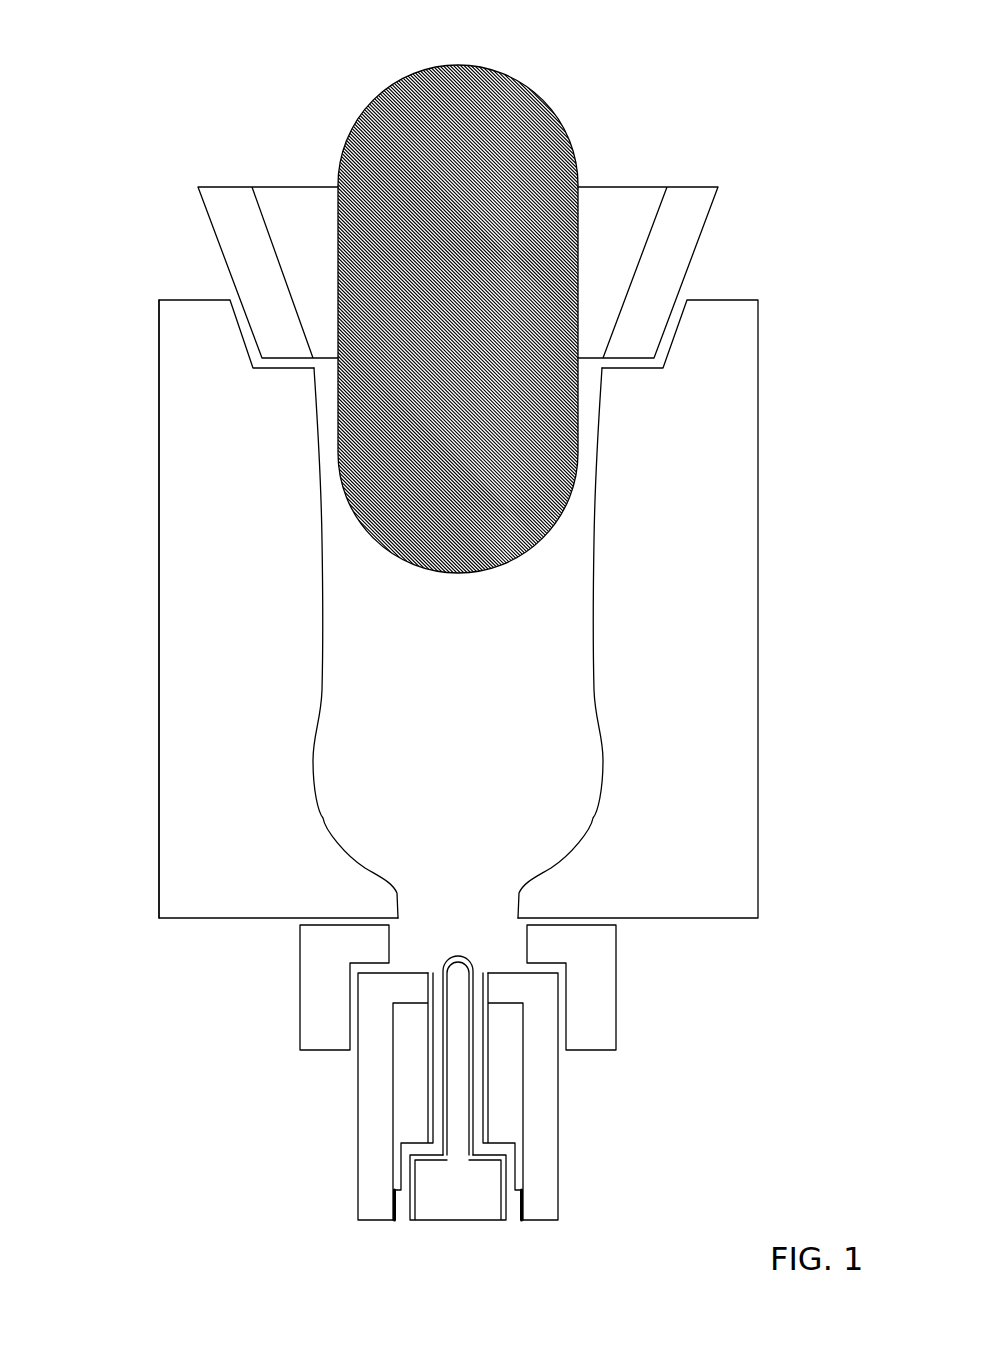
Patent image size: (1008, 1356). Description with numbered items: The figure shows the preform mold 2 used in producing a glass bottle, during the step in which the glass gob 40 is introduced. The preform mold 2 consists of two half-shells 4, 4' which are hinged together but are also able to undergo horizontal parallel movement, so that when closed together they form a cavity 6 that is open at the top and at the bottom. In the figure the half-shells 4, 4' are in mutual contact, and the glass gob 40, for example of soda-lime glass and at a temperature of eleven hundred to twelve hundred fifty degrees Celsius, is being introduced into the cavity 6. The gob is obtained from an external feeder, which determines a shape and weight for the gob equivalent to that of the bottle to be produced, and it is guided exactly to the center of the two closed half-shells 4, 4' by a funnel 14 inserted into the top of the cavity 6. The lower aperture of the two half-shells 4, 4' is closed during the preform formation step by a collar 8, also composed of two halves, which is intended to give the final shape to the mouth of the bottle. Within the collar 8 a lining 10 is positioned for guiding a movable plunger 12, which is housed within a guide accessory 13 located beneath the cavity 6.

The preform mold 2 is at (770, 420).
The half-shell 4 is at (497, 609).
The half-shell 4' is at (109, 609).
The cavity 6 is at (469, 772).
The collar 8 is at (618, 983).
The lining 10 is at (547, 1124).
The movable plunger 12 is at (452, 1195).
The guide accessory 13 is at (513, 1208).
The funnel 14 is at (683, 215).
The glass gob 40 is at (505, 90).